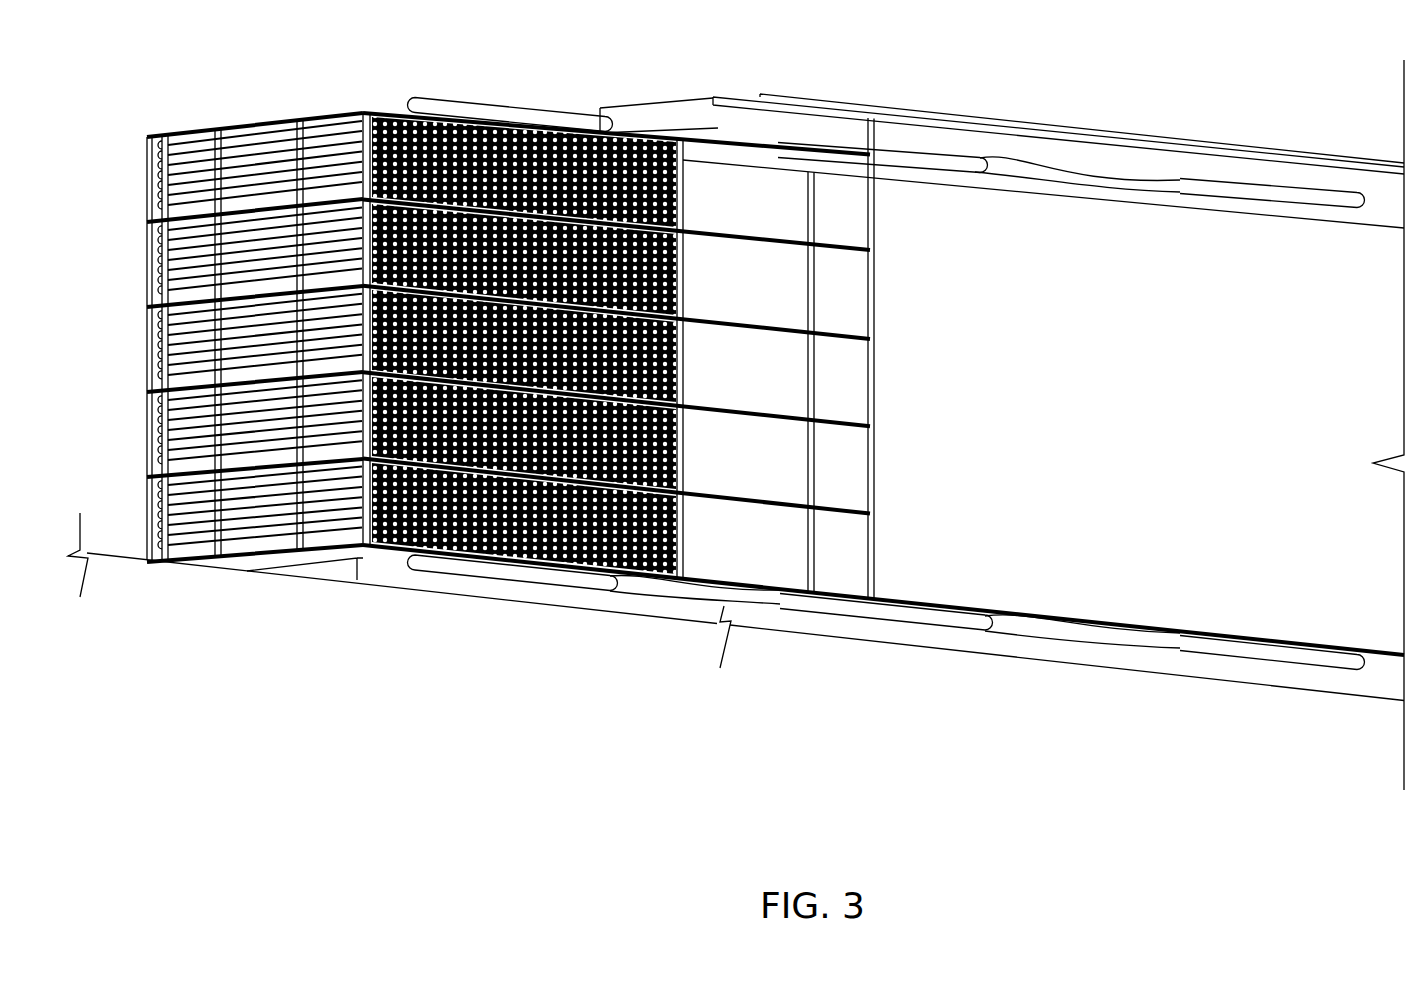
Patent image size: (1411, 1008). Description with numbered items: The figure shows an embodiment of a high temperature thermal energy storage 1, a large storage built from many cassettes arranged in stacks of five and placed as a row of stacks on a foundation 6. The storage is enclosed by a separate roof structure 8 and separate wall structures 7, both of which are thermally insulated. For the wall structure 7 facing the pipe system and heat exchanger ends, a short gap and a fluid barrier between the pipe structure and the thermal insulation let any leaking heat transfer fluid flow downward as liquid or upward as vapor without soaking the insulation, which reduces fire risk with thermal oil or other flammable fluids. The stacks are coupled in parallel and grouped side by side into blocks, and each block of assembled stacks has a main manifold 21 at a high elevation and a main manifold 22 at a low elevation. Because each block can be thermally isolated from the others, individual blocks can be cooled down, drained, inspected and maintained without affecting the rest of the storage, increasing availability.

The high temperature thermal energy storage 1 is at (638, 90).
The foundation 6 is at (333, 571).
The wall structure 7 is at (885, 572).
The roof structure 8 is at (748, 97).
The main manifold at a high elevation 21 is at (492, 105).
The main manifold at a low elevation 22 is at (497, 576).